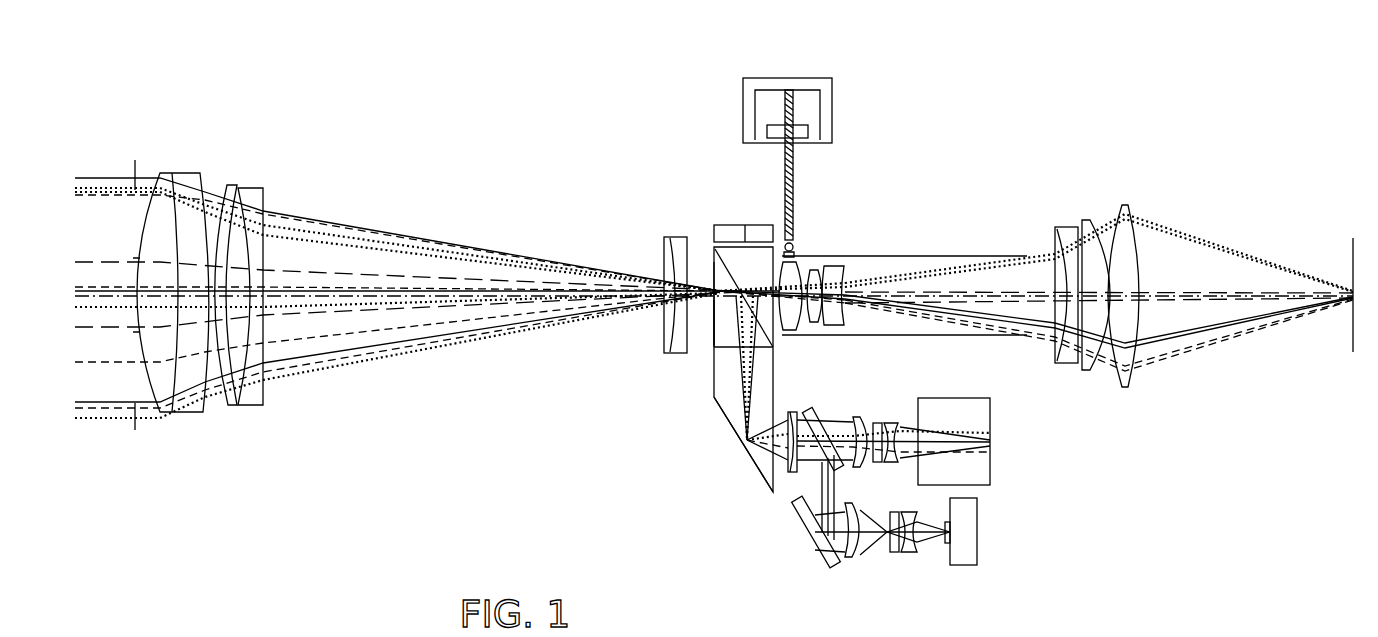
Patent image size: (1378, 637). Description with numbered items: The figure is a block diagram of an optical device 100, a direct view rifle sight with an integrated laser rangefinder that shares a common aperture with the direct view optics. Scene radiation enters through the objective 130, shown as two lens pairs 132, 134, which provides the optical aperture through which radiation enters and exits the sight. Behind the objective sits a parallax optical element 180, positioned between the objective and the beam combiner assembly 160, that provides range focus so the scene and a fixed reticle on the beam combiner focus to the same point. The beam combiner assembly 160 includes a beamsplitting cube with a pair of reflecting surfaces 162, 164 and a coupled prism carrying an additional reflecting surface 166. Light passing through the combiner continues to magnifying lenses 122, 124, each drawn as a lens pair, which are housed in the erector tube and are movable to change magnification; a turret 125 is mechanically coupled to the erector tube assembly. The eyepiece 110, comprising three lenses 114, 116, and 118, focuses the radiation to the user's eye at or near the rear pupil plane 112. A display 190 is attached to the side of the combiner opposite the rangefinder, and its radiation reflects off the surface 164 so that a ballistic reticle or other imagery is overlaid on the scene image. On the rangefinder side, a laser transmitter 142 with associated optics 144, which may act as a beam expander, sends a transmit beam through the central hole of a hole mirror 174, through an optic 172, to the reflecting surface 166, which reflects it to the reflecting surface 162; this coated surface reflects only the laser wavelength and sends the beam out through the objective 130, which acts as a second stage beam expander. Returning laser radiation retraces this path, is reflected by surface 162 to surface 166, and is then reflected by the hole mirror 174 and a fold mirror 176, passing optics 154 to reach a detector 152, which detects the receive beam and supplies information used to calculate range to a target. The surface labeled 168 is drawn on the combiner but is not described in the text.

The optical device 100 is at (1068, 80).
The eyepiece 110 is at (1042, 186).
The rear pupil plane 112 is at (1353, 238).
The lens 114 is at (1130, 380).
The lens 116 is at (1092, 370).
The lens 118 is at (1065, 367).
The magnifying lens 122 is at (800, 258).
The magnifying lens 124 is at (840, 266).
The turret 125 is at (767, 78).
The objective 130 is at (287, 137).
The lens pair 132 is at (180, 413).
The lens pair 134 is at (250, 406).
The laser transmitter 142 is at (990, 423).
The optics 144 is at (840, 391).
The detector 152 is at (977, 540).
The optics 154 is at (930, 573).
The beam combiner assembly 160 is at (710, 320).
The reflecting surface 162 is at (714, 306).
The reflecting surface 164 is at (733, 260).
The reflecting surface 166 is at (722, 420).
The beam splitter face 168 is at (712, 334).
The optic 172 is at (790, 412).
The hole mirror 174 is at (825, 470).
The fold mirror 176 is at (820, 560).
The parallax optical element 180 is at (670, 240).
The display 190 is at (723, 225).